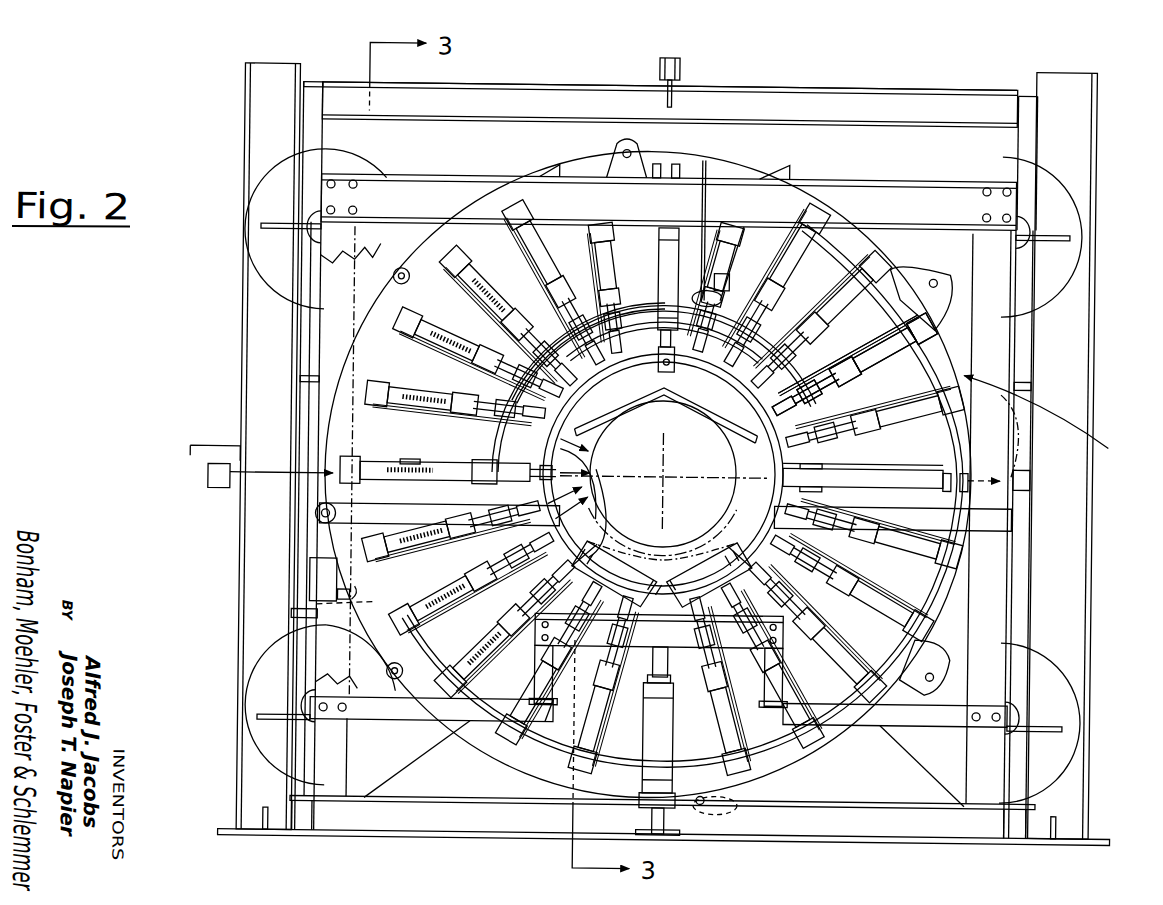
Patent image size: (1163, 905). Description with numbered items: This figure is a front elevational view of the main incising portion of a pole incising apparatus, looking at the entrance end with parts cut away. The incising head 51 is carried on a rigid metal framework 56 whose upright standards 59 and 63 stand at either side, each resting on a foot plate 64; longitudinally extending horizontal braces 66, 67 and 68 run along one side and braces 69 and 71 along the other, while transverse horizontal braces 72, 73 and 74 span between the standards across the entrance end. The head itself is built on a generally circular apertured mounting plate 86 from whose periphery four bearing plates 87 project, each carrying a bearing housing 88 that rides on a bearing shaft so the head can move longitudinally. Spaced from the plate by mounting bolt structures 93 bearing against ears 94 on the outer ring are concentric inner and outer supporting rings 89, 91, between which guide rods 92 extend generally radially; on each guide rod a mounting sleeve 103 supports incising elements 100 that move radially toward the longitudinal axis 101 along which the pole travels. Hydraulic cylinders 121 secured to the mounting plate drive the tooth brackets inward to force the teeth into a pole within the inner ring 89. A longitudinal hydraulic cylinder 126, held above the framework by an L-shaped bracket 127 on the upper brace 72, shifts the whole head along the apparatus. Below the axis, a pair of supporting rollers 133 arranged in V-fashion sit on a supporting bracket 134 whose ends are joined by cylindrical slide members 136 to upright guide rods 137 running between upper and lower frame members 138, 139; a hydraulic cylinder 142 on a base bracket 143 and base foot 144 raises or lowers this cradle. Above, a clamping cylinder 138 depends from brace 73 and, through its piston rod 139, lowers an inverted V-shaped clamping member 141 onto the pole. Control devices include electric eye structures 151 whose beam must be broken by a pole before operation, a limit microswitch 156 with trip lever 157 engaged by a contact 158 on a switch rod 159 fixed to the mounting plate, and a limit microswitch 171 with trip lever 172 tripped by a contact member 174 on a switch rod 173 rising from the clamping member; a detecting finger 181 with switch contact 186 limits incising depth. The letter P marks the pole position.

The incising head 51 is at (1049, 429).
The framework 56 is at (930, 98).
The standard 59 is at (259, 114).
The standard 63 is at (1081, 129).
The foot plate 64 is at (266, 845).
The horizontal brace 66 is at (308, 86).
The horizontal brace 67 is at (302, 375).
The horizontal brace 68 is at (301, 630).
The horizontal brace 69 is at (1022, 92).
The horizontal brace 71 is at (1015, 383).
The transverse horizontal brace 72 is at (803, 100).
The transverse horizontal brace 73 is at (862, 214).
The transverse horizontal brace 74 is at (898, 810).
The mounting plate 86 is at (418, 305).
The bearing plate 87 is at (276, 269).
The bearing housing 88 is at (358, 249).
The inner supporting ring 89 is at (782, 474).
The outer supporting ring 91 is at (900, 300).
The guide rod 92 is at (601, 291).
The mounting bolt structure 93 is at (399, 272).
The ear 94 is at (900, 299).
The incising element 100 is at (590, 465).
The longitudinal axis 101 is at (668, 470).
The mounting sleeve 103 is at (542, 266).
The hydraulic cylinder 121 is at (412, 336).
The hydraulic cylinder 126 is at (680, 68).
The L-shaped bracket 127 is at (675, 104).
The supporting roller 133 is at (682, 558).
The supporting bracket 134 is at (652, 625).
The cylindrical slide member 136 is at (648, 300).
The upright guide rod 137 is at (527, 577).
The hydraulic cylinder 138 is at (655, 265).
The piston rod 139 is at (648, 248).
The clamping member 141 is at (636, 395).
The hydraulic cylinder 142 is at (668, 736).
The base bracket 143 is at (654, 828).
The base foot 144 is at (665, 838).
The electric eye structure 151 is at (213, 479).
The limit microswitch 156 is at (321, 585).
The trip lever 157 is at (336, 601).
The contact 158 is at (360, 597).
The switch rod 159 is at (346, 594).
The limit microswitch 171 is at (727, 280).
The trip lever 172 is at (732, 261).
The switch rod 173 is at (704, 199).
The contact member 174 is at (720, 299).
The detecting finger 181 is at (472, 462).
The switch contact 186 is at (420, 462).
The pitch circle P is at (745, 488).